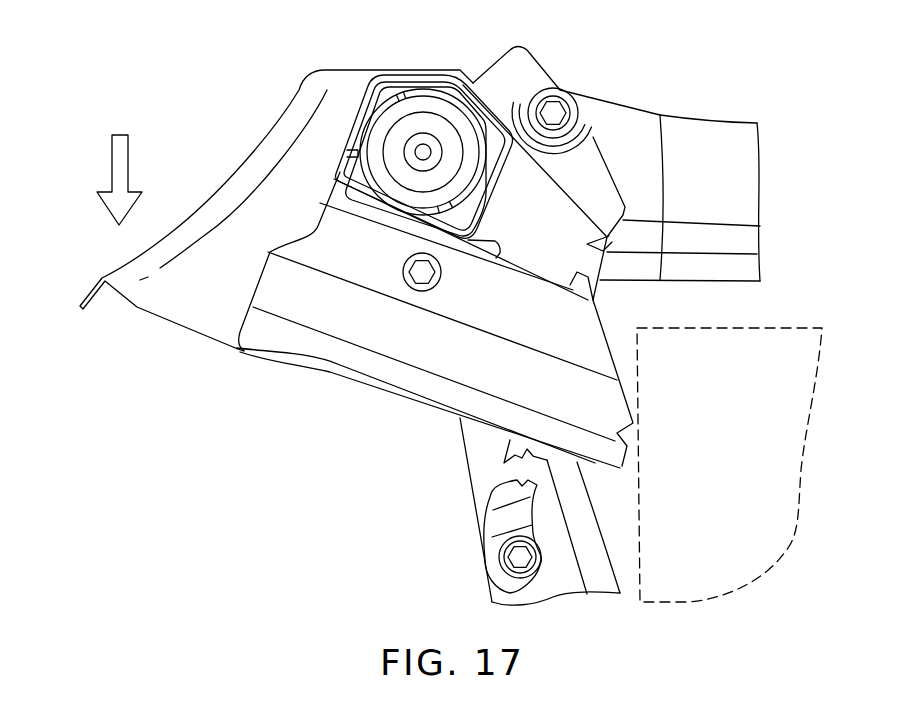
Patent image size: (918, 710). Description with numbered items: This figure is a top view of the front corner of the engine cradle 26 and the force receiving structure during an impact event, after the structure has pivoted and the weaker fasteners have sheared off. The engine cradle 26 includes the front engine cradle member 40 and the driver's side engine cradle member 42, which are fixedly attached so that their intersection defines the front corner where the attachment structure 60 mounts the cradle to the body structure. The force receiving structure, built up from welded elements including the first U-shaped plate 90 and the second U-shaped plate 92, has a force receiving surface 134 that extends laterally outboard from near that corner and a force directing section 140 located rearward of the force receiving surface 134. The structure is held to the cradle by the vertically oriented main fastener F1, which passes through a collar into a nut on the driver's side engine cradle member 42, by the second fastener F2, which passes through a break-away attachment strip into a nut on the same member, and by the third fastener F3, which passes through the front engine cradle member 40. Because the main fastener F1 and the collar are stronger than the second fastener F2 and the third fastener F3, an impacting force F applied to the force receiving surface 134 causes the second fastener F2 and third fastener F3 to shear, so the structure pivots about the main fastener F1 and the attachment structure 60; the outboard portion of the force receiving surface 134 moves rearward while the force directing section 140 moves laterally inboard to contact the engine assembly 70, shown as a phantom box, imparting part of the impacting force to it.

The force receiving surface 134 is at (247, 163).
The first U-shaped plate 90 is at (397, 105).
The attachment structure 60 is at (438, 117).
The second U-shaped plate 92 is at (462, 228).
The engine cradle 26 is at (693, 86).
The front engine cradle member 40 is at (723, 187).
The engine assembly 70 is at (740, 327).
The force directing section 140 is at (623, 393).
The driver's side engine cradle member 42 is at (590, 547).
The impacting force F is at (110, 162).
The main fastener F1 is at (423, 273).
The second fastener F2 is at (553, 113).
The third fastener F3 is at (520, 557).